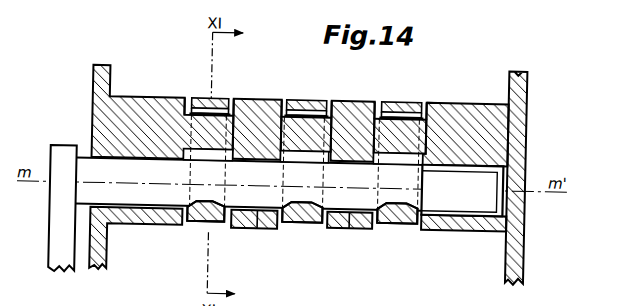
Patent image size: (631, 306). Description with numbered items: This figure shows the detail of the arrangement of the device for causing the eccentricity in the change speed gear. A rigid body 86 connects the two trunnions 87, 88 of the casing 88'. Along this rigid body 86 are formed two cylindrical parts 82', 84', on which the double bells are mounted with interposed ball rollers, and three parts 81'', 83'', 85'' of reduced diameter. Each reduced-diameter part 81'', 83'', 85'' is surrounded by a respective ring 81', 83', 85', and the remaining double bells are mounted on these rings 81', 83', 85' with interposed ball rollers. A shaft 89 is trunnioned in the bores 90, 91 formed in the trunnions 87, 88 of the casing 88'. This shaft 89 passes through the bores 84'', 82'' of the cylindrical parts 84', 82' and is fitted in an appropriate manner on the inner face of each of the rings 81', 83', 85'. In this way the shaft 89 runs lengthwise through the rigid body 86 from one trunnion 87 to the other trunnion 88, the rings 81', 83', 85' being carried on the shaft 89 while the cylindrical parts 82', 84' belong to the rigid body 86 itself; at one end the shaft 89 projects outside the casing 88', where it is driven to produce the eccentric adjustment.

The trunnion 88 is at (142, 112).
The casing 88' is at (538, 178).
The trunnion 87 is at (487, 139).
The ring 85' is at (206, 83).
The reduced-diameter part 85'' is at (188, 84).
The cylindrical part 84' is at (258, 116).
The bore 84'' is at (268, 231).
The ring 83' is at (306, 92).
The reduced-diameter part 83'' is at (302, 86).
The cylindrical part 82' is at (352, 114).
The bore 82'' is at (363, 234).
The ring 81' is at (408, 102).
The reduced-diameter part 81'' is at (456, 87).
The rigid body 86 is at (375, 106).
The shaft 89 is at (133, 196).
The bore 90 is at (504, 201).
The bore 91 is at (92, 208).